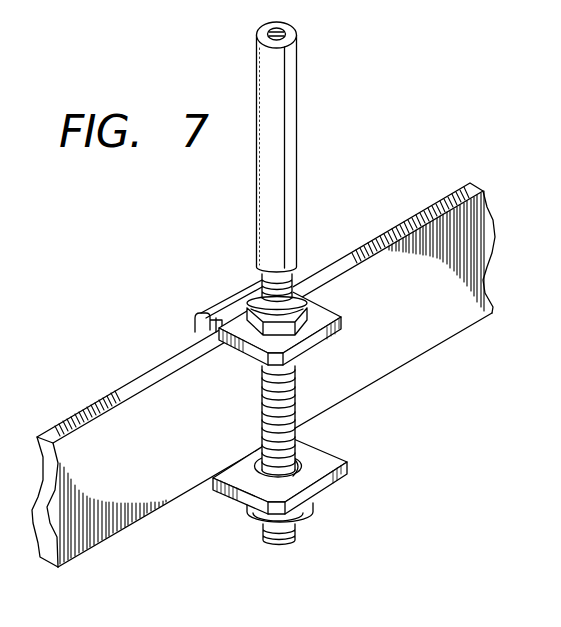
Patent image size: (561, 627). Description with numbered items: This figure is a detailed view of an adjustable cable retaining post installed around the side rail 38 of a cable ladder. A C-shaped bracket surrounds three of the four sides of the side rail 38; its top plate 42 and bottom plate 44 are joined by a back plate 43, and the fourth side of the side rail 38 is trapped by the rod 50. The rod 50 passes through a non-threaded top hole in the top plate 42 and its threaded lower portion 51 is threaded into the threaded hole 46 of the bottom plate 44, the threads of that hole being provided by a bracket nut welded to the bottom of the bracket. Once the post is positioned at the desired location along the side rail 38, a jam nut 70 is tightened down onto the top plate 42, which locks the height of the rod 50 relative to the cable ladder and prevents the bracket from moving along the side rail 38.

The side rail 38 is at (435, 340).
The top plate 42 is at (328, 307).
The back plate 43 is at (191, 326).
The bottom plate 44 is at (333, 482).
The threaded hole 46 is at (300, 457).
The rod 50 is at (289, 135).
The threaded lower portion 51 is at (262, 409).
The jam nut 70 is at (255, 313).